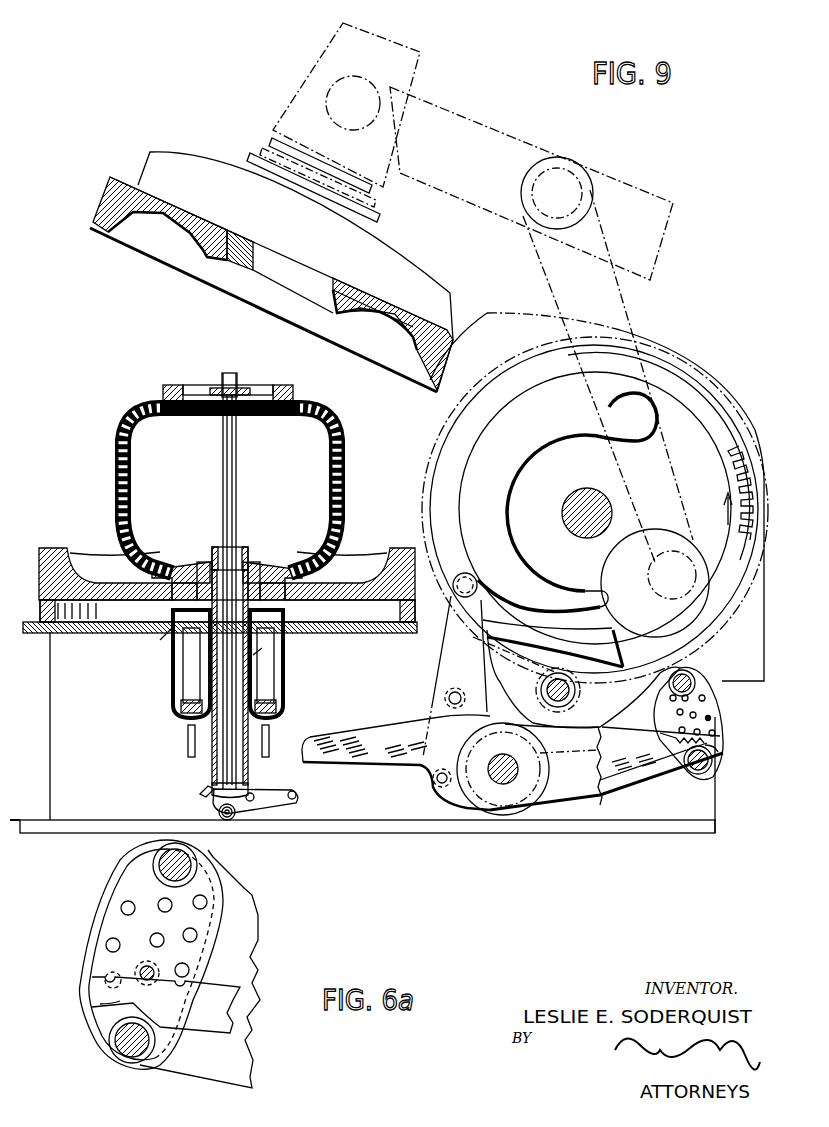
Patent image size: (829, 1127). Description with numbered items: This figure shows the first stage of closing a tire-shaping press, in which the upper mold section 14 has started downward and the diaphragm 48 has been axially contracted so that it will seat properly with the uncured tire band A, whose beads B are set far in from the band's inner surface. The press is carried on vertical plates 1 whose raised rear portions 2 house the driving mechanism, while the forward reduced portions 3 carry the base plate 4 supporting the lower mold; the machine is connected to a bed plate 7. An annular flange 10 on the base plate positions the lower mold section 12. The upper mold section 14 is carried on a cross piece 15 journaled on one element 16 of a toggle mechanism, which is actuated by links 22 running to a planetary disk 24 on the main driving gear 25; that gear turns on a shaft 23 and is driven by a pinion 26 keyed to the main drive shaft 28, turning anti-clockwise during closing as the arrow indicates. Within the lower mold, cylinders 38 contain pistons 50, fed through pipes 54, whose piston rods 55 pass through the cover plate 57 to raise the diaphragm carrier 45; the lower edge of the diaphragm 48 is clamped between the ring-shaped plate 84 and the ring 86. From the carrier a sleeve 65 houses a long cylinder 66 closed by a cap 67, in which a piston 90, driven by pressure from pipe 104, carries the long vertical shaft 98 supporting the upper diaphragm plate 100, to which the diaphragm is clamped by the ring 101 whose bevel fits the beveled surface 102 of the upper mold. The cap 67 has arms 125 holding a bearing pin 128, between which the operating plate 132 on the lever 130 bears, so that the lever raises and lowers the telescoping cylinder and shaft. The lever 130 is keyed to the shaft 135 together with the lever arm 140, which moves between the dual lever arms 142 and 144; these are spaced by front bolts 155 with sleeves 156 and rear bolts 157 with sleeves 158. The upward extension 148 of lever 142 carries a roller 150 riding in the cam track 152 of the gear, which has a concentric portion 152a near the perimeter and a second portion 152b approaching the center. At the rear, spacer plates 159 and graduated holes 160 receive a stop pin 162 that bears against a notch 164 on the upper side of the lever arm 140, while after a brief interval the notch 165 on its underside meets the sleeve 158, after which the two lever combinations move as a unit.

In FIG. 9, the vertical plates 1 is at (712, 818).
In FIG. 9, the raised portions 2 is at (710, 386).
In FIG. 9, the reduced portions 3 is at (58, 737).
In FIG. 9, the base plate 4 is at (78, 634).
In FIG. 9, the bed plate 7 is at (620, 823).
In FIG. 9, the annular raised flange 10 is at (42, 609).
In FIG. 9, the lower mold section 12 is at (48, 548).
In FIG. 9, the upper mold section 14 is at (228, 297).
In FIG. 9, the cross piece 15 is at (412, 60).
In FIG. 9, the toggle mechanism element 16 is at (490, 112).
In FIG. 9, the links 22 is at (615, 297).
In FIG. 9, the shaft 23 is at (562, 515).
In FIG. 9, the planetary gear or disk 24 is at (676, 545).
In FIG. 9, the main driving gear 25 is at (738, 456).
In FIG. 9, the pinion 26 is at (574, 706).
In FIG. 9, the main drive shaft 28 is at (577, 691).
In FIG. 9, the cylinders 38 is at (172, 688).
In FIG. 9, the diaphragm carrier 45 is at (203, 568).
In FIG. 9, the diaphragm 48 is at (133, 473).
In FIG. 9, the piston 50 is at (181, 706).
In FIG. 9, the pipes 54 is at (188, 750).
In FIG. 9, the piston rod 55 is at (188, 665).
In FIG. 9, the cover plate 57 is at (157, 639).
In FIG. 9, the sleeve 65 is at (268, 655).
In FIG. 9, the long cylinder 66 is at (212, 774).
In FIG. 9, the cap 67 is at (243, 793).
In FIG. 9, the ring-shaped plate 84 is at (170, 570).
In FIG. 9, the ring 86 is at (284, 570).
In FIG. 9, the piston 90 is at (238, 560).
In FIG. 9, the long vertical shaft 98 is at (232, 495).
In FIG. 9, the upper diaphragm plate 100 is at (293, 413).
In FIG. 9, the ring 101 is at (268, 387).
In FIG. 9, the beveled surface 102 is at (336, 313).
In FIG. 9, the pipe 104 is at (204, 794).
In FIG. 9, the arms 125 is at (222, 813).
In FIG. 9, the transverse bearing pin 128 is at (235, 817).
In FIG. 9, the lever 130 is at (357, 760).
In FIG. 9, the operating plate 132 is at (292, 797).
In FIG. 9, the shaft 135 is at (518, 770).
In FIG. 9, the lever arm 140 is at (630, 778).
In FIG. 6A, the lever arm 140 is at (231, 1004).
In FIG. 9, the lever arm 142 is at (672, 778).
In FIG. 9, the lever arm 144 is at (550, 808).
In FIG. 6A, the lever arm 144 is at (240, 1067).
In FIG. 9, the upward extension 148 is at (445, 654).
In FIG. 9, the roller 150 is at (472, 592).
In FIG. 9, the cam track 152 is at (547, 440).
In FIG. 9, the concentric portion 152a is at (517, 400).
In FIG. 9, the second portion 152b is at (540, 612).
In FIG. 9, the bolts 155 is at (450, 694).
In FIG. 9, the spacer sleeves 156 is at (447, 704).
In FIG. 9, the bolts 157 is at (697, 690).
In FIG. 6A, the bolts 157 is at (186, 860).
In FIG. 9, the spacer sleeves 158 is at (687, 675).
In FIG. 6A, the spacer sleeves 158 is at (160, 862).
In FIG. 6A, the spacer plates 159 is at (210, 882).
In FIG. 9, the holes 160 is at (696, 714).
In FIG. 6A, the holes 160 is at (121, 908).
In FIG. 9, the stop pin 162 is at (712, 718).
In FIG. 6A, the stop pin 162 is at (138, 970).
In FIG. 9, the notches 164 is at (662, 734).
In FIG. 6A, the notches 164 is at (190, 976).
In FIG. 9, the notch 165 is at (719, 752).
In FIG. 6A, the notch 165 is at (110, 1003).
In FIG. 9, the uncured tire band A is at (347, 475).
In FIG. 9, the beads B is at (318, 408).